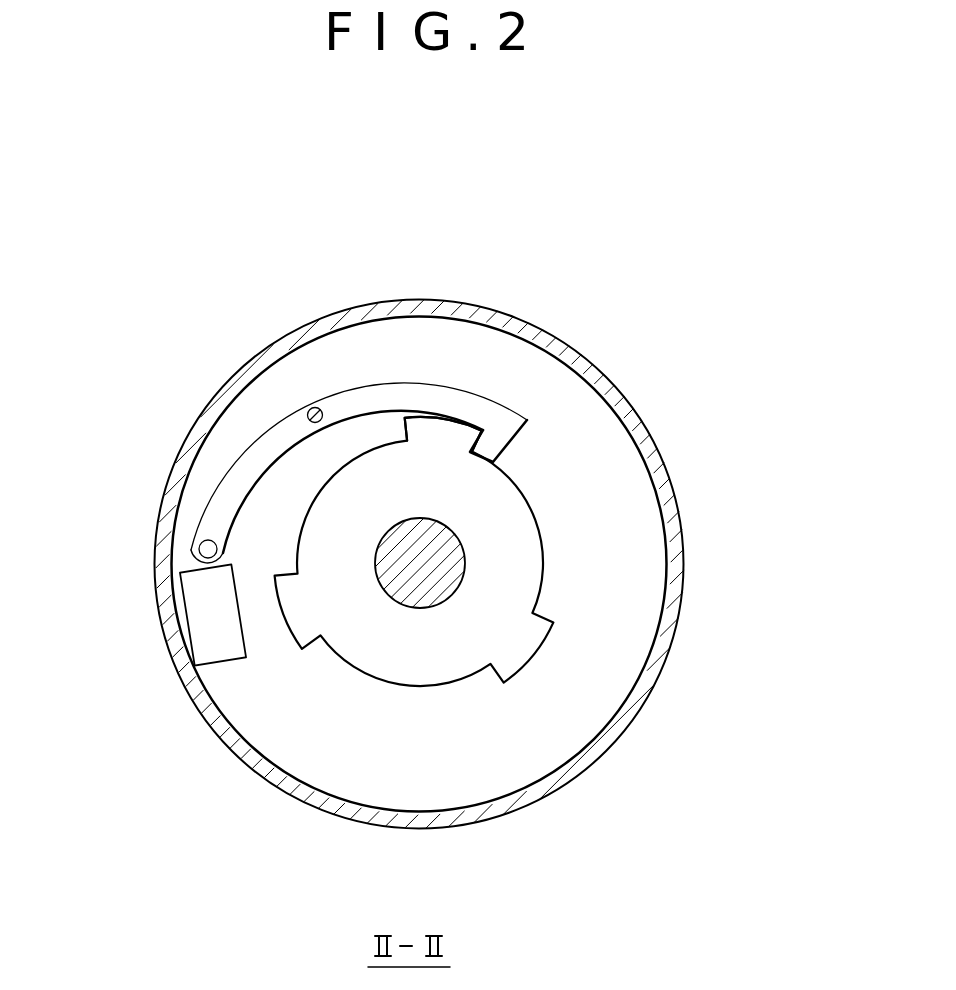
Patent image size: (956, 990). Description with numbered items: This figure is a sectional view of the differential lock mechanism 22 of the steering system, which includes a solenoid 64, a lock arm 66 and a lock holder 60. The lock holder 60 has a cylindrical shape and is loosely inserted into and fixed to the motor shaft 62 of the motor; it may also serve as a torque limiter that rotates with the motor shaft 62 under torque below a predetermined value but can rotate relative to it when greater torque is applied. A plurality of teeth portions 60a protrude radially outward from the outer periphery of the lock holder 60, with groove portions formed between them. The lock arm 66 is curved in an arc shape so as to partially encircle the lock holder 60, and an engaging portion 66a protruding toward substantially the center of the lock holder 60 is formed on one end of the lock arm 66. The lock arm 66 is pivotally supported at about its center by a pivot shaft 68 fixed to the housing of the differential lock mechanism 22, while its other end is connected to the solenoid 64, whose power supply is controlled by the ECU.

The differential lock mechanism 22 is at (633, 338).
The lock holder 60 is at (532, 520).
The teeth portions 60a is at (445, 413).
The motor shaft 62 is at (450, 595).
The solenoid 64 is at (185, 610).
The lock arm 66 is at (420, 382).
The engaging portion 66a is at (512, 443).
The pivot shaft 68 is at (313, 408).